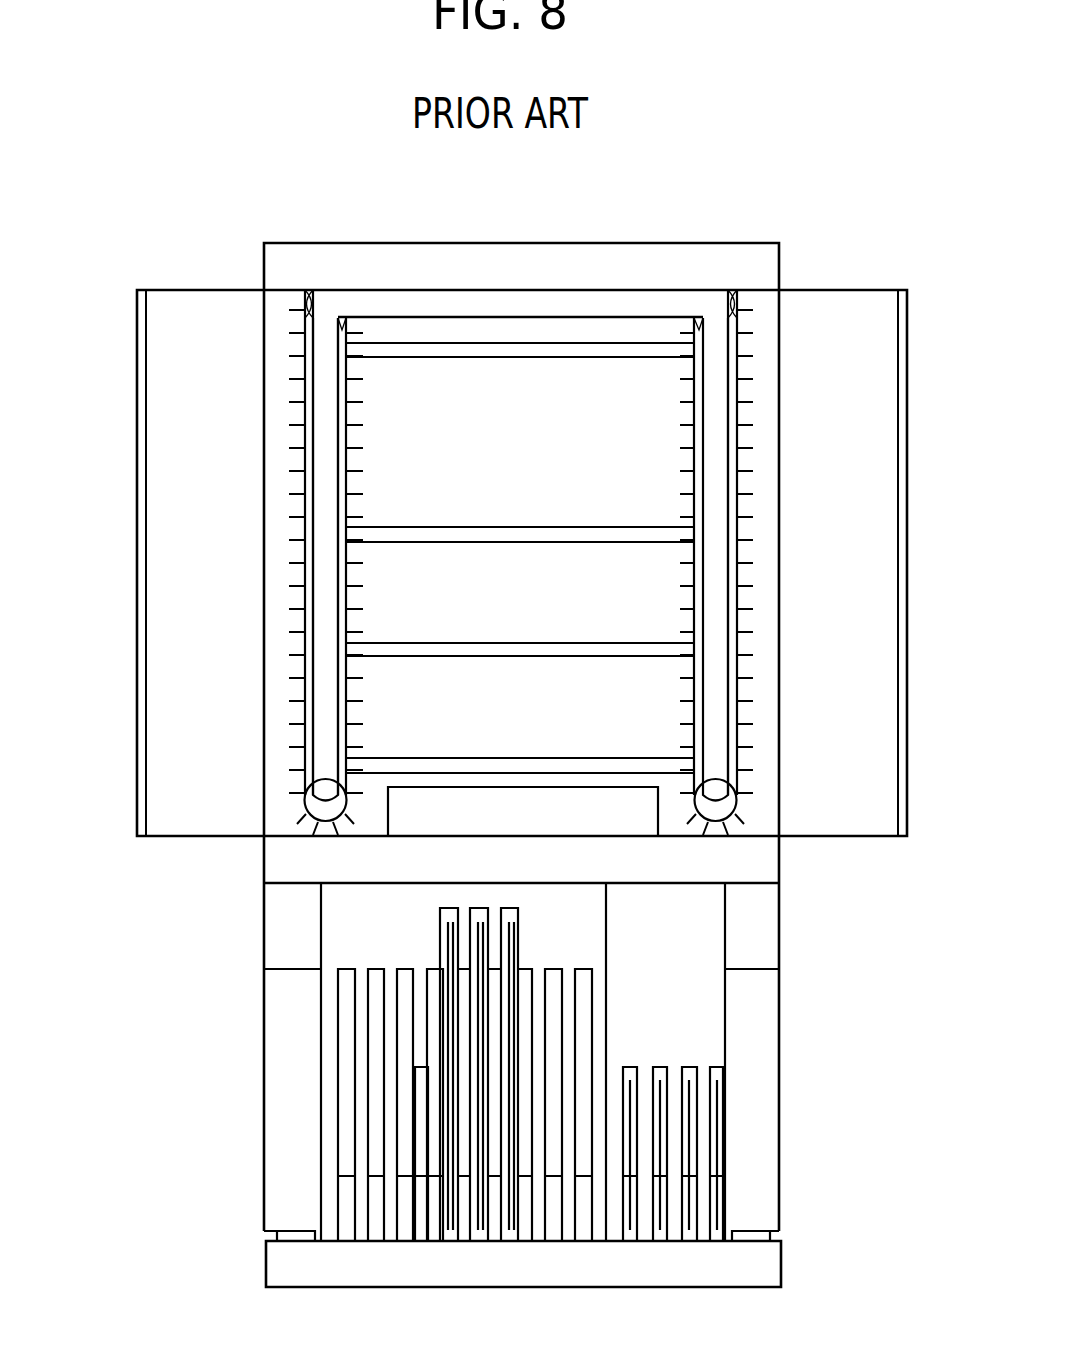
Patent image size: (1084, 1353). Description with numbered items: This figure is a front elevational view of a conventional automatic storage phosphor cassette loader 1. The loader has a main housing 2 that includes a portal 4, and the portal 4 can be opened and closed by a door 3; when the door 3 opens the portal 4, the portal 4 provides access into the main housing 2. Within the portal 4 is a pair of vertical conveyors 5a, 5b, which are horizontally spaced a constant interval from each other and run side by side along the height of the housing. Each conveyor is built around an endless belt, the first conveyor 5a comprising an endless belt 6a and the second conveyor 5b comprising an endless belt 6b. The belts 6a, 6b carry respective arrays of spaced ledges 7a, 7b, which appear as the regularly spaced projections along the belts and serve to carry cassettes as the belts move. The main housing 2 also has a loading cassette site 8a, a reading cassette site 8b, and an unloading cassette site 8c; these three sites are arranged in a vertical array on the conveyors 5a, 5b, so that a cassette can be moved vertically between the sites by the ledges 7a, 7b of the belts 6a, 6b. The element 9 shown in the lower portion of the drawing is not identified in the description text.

The automatic storage phosphor cassette loader 1 is at (851, 178).
The main housing 2 is at (750, 1065).
The door 3 is at (833, 738).
The portal 4 is at (389, 426).
The vertical conveyor 5a is at (753, 567).
The vertical conveyor 5b is at (287, 569).
The endless belt 6a is at (738, 462).
The endless belt 6b is at (348, 620).
The ledges 7a is at (692, 585).
The ledges 7b is at (348, 492).
The loading cassette site 8a is at (658, 420).
The reading cassette site 8b is at (329, 526).
The unloading cassette site 8c is at (358, 661).
The heat sink fins 9 is at (450, 1235).